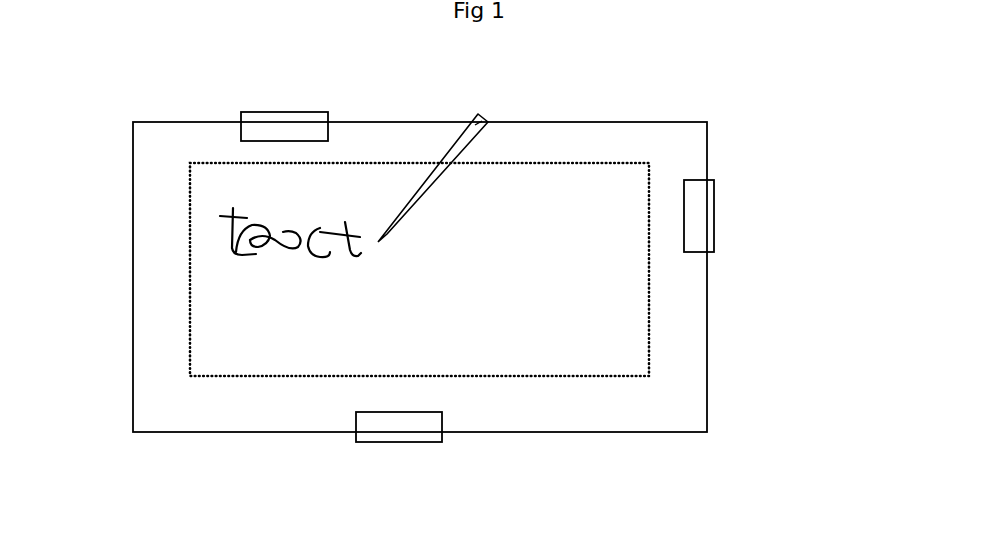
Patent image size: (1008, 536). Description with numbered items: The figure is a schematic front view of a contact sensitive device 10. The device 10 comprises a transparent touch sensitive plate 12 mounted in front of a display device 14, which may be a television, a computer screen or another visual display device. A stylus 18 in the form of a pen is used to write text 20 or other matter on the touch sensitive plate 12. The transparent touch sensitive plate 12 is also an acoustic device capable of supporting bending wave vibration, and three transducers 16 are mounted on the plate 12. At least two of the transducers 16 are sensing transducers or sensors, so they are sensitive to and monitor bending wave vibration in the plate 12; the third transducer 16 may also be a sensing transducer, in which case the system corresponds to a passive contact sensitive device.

The contact sensitive device 10 is at (728, 80).
The transparent touch sensitive plate 12 is at (300, 412).
The display device 14 is at (233, 380).
The transducers 16 is at (276, 124).
The stylus 18 is at (488, 121).
The text 20 is at (258, 226).